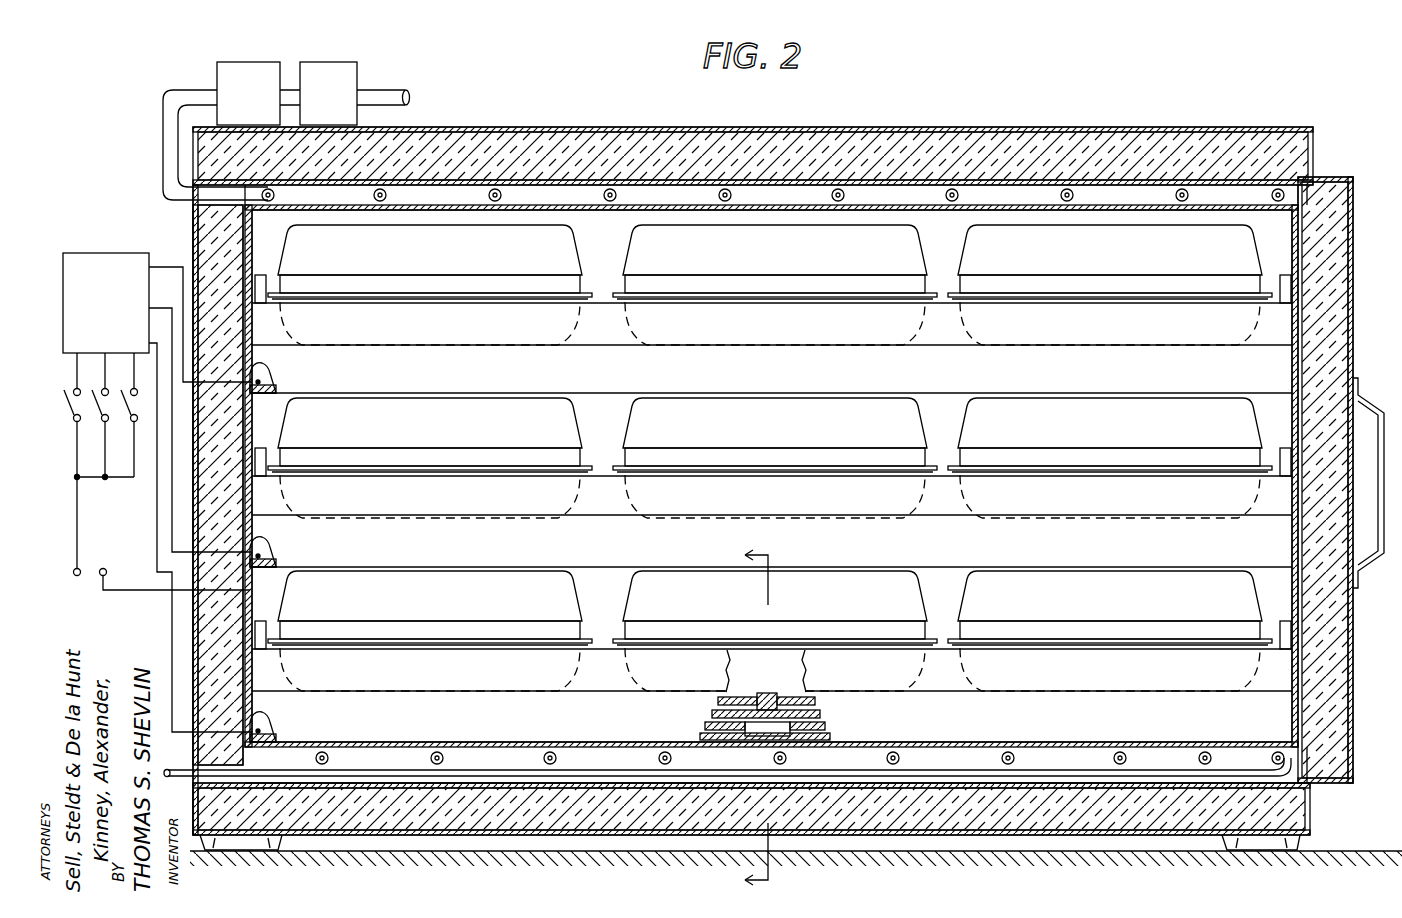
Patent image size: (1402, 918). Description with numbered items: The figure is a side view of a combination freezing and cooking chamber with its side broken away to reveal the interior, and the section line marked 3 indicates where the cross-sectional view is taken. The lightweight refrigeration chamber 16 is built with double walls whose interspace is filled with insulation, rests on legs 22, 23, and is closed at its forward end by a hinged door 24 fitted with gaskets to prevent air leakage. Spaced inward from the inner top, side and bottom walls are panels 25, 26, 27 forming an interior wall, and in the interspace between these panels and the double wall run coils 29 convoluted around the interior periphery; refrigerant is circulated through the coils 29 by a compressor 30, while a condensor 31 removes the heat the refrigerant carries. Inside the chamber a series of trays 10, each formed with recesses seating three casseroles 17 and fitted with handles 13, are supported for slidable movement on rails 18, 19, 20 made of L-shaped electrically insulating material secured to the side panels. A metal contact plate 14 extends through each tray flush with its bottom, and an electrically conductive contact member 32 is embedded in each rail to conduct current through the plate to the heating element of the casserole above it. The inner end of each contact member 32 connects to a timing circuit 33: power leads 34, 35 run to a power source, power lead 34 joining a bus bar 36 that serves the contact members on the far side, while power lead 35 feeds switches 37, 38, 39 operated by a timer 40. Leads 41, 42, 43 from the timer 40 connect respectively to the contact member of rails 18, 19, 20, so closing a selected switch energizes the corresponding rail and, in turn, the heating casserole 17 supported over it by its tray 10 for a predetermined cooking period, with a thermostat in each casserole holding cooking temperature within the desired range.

The section line 3- 3 is at (743, 718).
The tray 10 is at (958, 334).
The handles 13 is at (259, 275).
The metal contact plate 14 is at (762, 700).
The refrigeration chamber 16 is at (968, 128).
The casseroles 17 is at (442, 263).
The rail 18 is at (870, 383).
The rail 19 is at (683, 554).
The rail 20 is at (805, 740).
The leg 22 is at (240, 852).
The leg 23 is at (1260, 852).
The door 24 is at (1350, 292).
The panel 25 is at (625, 210).
The side panel 26 is at (960, 257).
The panel 27 is at (505, 742).
The coils 29 is at (380, 92).
The compressor 30 is at (262, 105).
The condensor 31 is at (342, 105).
The contact member 32 is at (268, 383).
The timing circuit 33 is at (148, 471).
The power lead 34 is at (103, 568).
The power lead 35 is at (79, 576).
The bus bar 36 is at (255, 520).
The switch 37 is at (63, 415).
The switch 38 is at (93, 415).
The switch 39 is at (122, 415).
The timer 40 is at (120, 307).
The lead 41 is at (183, 270).
The lead 42 is at (172, 308).
The lead 43 is at (157, 516).